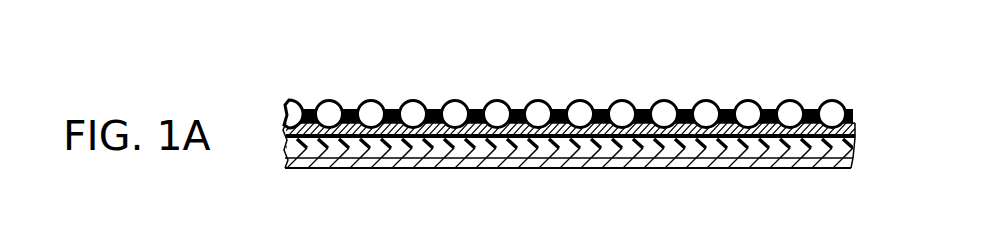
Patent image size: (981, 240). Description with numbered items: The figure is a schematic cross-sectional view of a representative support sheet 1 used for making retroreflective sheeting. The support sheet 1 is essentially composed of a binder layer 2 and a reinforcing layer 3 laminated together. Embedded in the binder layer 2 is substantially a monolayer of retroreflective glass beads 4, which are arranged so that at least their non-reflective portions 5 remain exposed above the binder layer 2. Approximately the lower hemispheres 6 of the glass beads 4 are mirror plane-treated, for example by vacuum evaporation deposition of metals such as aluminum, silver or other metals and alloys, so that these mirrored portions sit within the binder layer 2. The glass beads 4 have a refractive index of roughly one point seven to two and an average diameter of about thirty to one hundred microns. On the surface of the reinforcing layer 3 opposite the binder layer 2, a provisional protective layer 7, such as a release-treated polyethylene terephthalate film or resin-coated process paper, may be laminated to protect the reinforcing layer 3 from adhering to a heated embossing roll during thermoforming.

The support sheet 1 is at (371, 84).
The binder layer 2 is at (855, 135).
The reinforcing layer 3 is at (851, 148).
The retroreflective glass beads 4 is at (795, 108).
The non-reflective portions 5 is at (832, 101).
The mirror plane-treated lower hemispheres 6 is at (854, 128).
The provisional protective layer 7 is at (833, 168).